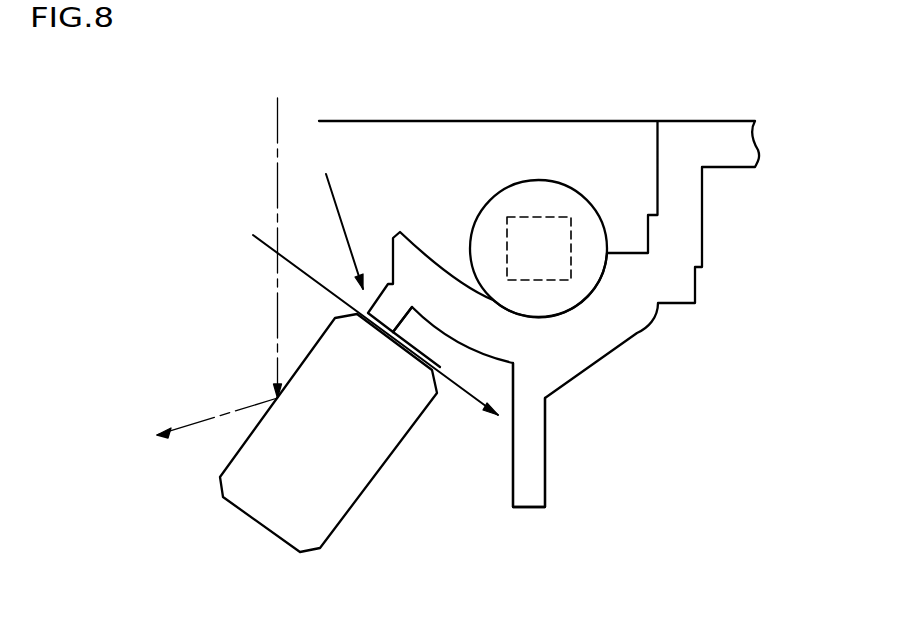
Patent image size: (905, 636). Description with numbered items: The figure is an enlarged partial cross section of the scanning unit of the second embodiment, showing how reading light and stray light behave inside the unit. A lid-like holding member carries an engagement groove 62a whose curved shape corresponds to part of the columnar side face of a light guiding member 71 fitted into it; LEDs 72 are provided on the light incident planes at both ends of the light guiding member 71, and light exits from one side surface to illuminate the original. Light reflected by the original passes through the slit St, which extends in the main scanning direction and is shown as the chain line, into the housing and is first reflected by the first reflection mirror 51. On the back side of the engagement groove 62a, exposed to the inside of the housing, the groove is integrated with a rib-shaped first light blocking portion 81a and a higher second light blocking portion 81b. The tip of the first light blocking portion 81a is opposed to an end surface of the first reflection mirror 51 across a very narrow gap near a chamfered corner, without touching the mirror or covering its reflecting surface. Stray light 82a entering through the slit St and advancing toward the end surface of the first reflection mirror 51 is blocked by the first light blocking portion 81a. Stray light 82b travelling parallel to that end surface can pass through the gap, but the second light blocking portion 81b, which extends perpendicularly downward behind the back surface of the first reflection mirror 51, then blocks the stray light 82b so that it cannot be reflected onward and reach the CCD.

The first reflection mirror 51 is at (283, 503).
The engagement groove 62a is at (425, 173).
The light guiding member 71 is at (538, 195).
The LED 72 is at (550, 215).
The first light blocking portion 81a is at (393, 322).
The second light blocking portion 81b is at (528, 478).
The stray light 82a is at (333, 200).
The stray light 82b is at (272, 246).
The slit St is at (260, 142).